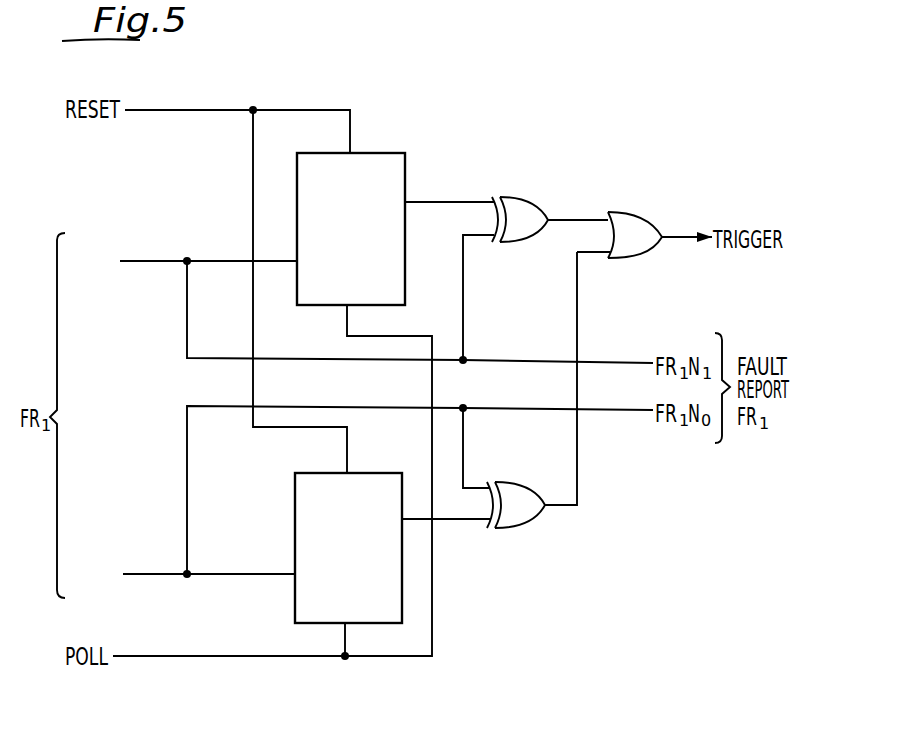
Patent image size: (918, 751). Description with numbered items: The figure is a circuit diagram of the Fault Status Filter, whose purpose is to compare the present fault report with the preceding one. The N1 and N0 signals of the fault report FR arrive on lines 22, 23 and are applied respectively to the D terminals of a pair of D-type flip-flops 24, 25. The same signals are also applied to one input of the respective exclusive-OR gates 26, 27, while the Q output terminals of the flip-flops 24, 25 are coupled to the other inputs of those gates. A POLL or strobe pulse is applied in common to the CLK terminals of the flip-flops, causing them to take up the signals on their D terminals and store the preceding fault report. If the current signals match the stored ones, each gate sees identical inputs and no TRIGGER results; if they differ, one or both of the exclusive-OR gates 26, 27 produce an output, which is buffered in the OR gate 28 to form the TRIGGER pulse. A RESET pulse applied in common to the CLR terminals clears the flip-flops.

The line 22 is at (152, 259).
The line 23 is at (145, 572).
The D-type flip-flop 24 is at (388, 157).
The D-type flip-flop 25 is at (295, 533).
The exclusive-OR gate 26 is at (512, 205).
The exclusive-OR gate 27 is at (520, 518).
The OR gate 28 is at (628, 220).